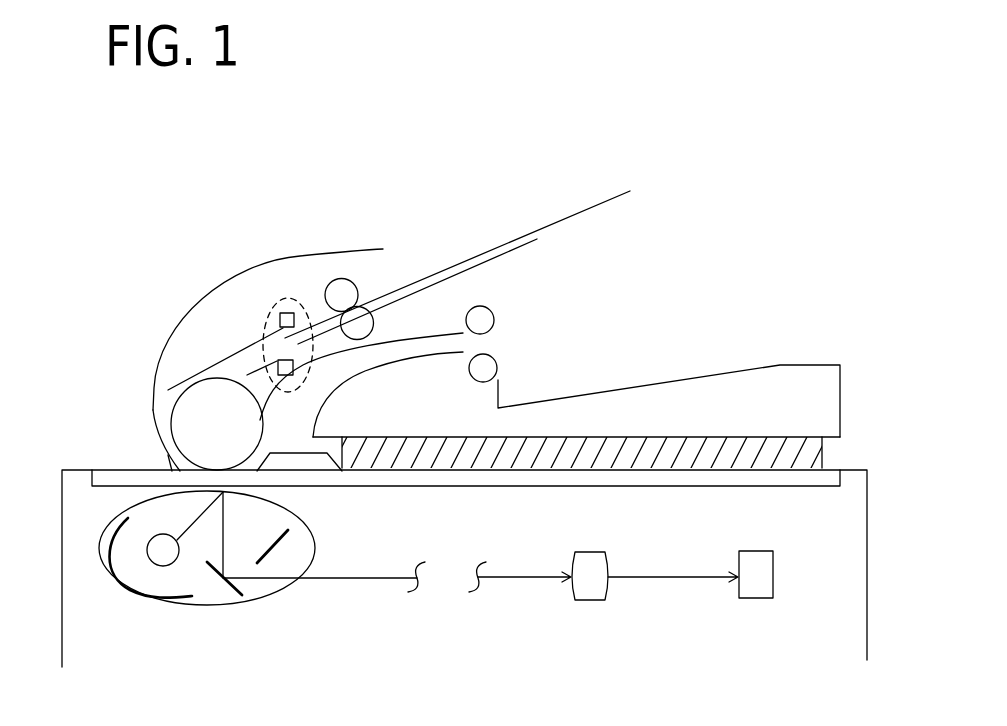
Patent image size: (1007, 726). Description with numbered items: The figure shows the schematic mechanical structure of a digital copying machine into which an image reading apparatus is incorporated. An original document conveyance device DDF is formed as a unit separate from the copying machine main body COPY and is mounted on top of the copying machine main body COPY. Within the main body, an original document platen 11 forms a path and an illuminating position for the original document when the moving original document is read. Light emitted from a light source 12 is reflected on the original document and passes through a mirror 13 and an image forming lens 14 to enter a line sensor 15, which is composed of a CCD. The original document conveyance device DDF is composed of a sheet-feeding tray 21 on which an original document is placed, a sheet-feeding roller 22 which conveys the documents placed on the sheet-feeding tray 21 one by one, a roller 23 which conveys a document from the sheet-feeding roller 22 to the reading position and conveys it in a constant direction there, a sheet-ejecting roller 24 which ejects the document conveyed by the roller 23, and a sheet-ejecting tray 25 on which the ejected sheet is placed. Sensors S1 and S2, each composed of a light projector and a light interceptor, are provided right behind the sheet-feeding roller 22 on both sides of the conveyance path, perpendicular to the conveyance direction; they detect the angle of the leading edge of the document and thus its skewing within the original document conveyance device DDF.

The original document platen 11 is at (678, 488).
The light source 12 is at (163, 568).
The mirror 13 is at (228, 586).
The image forming lens 14 is at (590, 551).
The line sensor 15 is at (757, 551).
The sheet-feeding tray 21 is at (560, 221).
The sheet-feeding roller 22 is at (335, 279).
The roller 23 is at (162, 426).
The sheet-ejecting roller 24 is at (495, 318).
The sheet-ejecting tray 25 is at (768, 364).
The sensor S1 is at (282, 302).
The sensor S2 is at (285, 367).
The original document conveyance device DDF is at (726, 322).
The copying machine main body COPY is at (57, 593).